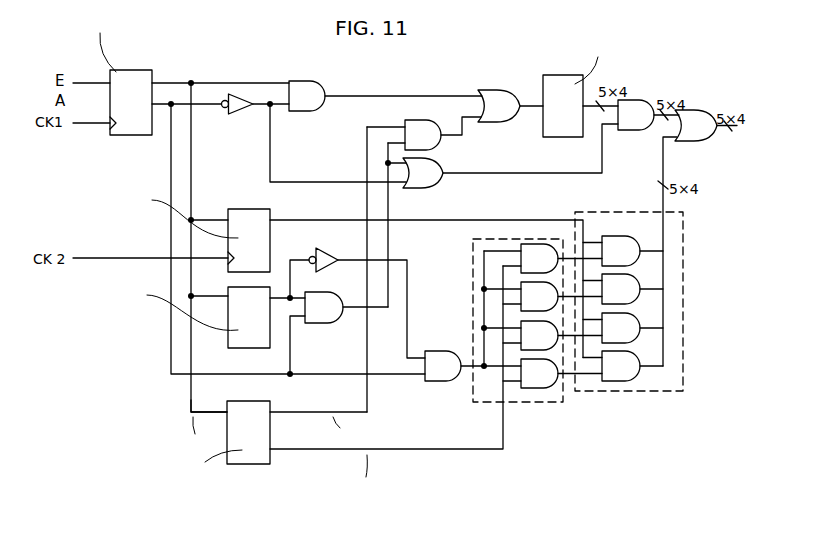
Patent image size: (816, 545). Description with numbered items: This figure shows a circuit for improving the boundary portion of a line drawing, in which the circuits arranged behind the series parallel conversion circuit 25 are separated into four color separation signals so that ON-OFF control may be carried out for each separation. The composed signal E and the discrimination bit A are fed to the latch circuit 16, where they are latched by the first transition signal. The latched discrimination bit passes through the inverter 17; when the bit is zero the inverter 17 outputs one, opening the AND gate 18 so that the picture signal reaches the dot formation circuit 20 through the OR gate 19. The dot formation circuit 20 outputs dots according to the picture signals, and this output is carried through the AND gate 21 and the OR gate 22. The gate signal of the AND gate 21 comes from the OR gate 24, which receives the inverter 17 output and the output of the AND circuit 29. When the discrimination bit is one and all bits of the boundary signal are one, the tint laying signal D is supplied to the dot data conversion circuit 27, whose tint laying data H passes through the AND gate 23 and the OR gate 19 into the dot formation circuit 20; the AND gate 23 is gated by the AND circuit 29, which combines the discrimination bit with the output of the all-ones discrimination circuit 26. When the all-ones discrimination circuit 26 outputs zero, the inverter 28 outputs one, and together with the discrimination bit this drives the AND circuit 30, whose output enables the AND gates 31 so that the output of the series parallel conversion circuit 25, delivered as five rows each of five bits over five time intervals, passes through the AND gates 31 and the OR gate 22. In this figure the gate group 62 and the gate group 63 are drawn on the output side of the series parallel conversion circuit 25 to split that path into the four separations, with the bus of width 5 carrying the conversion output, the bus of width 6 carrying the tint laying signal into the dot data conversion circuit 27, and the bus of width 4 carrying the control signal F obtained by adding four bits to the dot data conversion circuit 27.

The latch circuit 16 is at (130, 70).
The inverter 17 is at (238, 110).
The AND gate 18 is at (306, 81).
The OR gate 19 is at (489, 90).
The dot formation circuit 20 is at (567, 75).
The AND gate 21 is at (636, 100).
The OR gate 22 is at (692, 110).
The AND gate 23 is at (440, 147).
The OR gate 24 is at (433, 186).
The series parallel conversion circuit 25 is at (244, 209).
The ALL 1 discrimination circuit 26 is at (246, 348).
The dot data conversion circuit 27 is at (251, 465).
The inverter 28 is at (333, 257).
The AND circuit 29 is at (323, 323).
The AND circuit 30 is at (438, 381).
The AND gate 31 is at (172, 88).
The AND gate group 62 is at (536, 403).
The AND gate group 63 is at (617, 392).
The 5-bit bus 5 is at (495, 226).
The 6-bit bus 6 is at (213, 417).
The 4-bit bus 4 is at (312, 454).